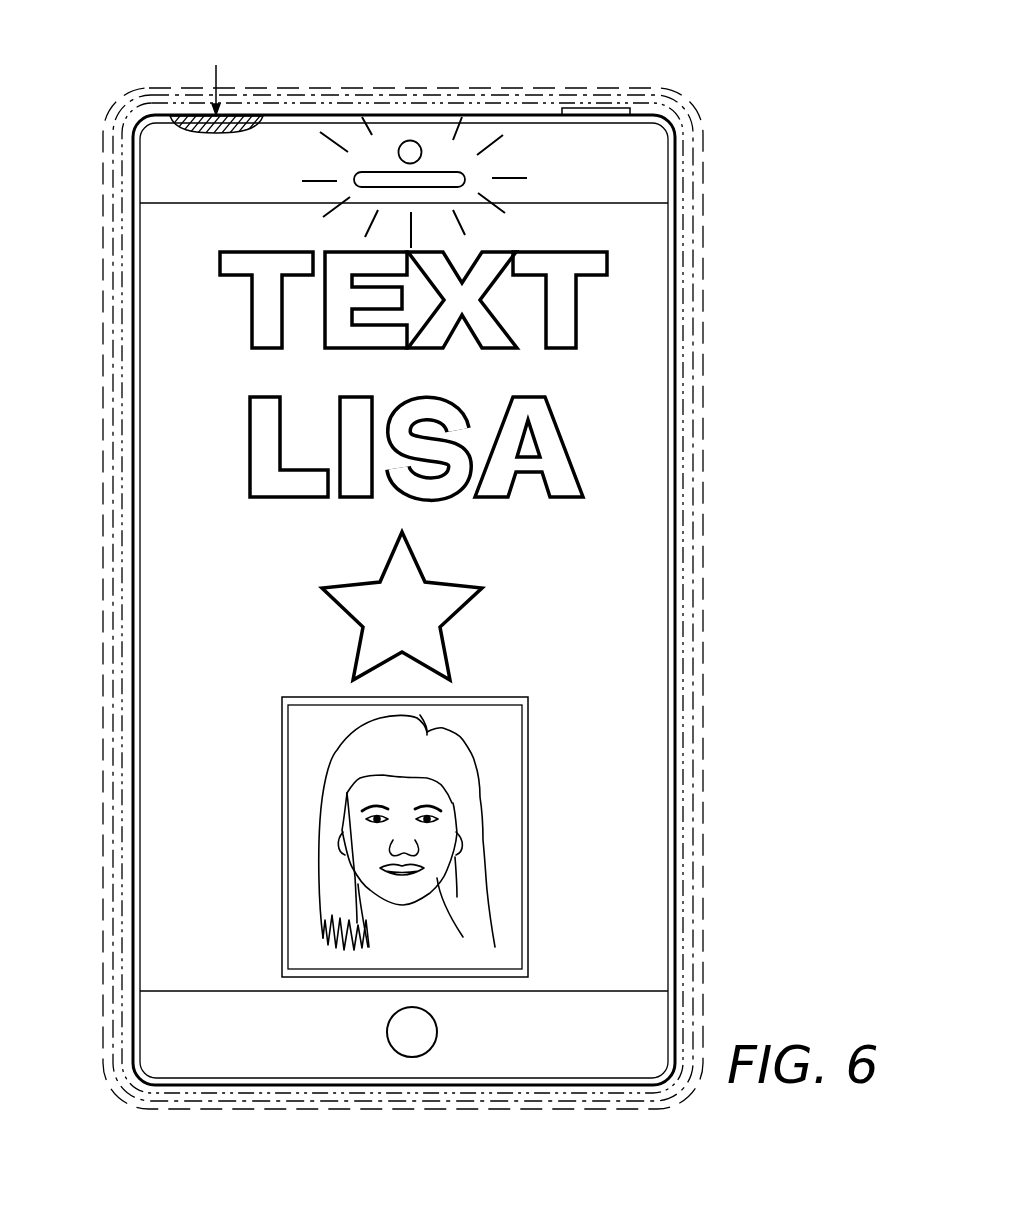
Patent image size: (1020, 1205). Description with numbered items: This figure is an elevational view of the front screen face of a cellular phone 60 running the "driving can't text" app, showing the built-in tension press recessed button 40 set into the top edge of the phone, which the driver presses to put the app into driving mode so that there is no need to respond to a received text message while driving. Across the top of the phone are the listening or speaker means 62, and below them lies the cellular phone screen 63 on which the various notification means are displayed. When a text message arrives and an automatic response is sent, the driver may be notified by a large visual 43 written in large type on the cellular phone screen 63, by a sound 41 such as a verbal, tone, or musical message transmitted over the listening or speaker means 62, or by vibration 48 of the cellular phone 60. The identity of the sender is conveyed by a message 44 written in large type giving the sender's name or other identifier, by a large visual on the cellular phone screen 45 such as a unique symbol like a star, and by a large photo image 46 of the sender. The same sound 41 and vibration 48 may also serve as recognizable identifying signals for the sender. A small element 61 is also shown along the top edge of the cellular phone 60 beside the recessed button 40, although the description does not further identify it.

The built-in tension press recessed button 40 is at (197, 116).
The sound 41 is at (408, 140).
The large visual 43 is at (255, 322).
The message 44 is at (255, 470).
The large visual on the cellular phone screen 45 is at (362, 633).
The large photo image 46 is at (282, 838).
The vibration 48 is at (103, 972).
The cellular phone 60 is at (133, 188).
The button 61 is at (593, 108).
The listening or speaker means 62 is at (435, 172).
The cellular phone screen 63 is at (175, 282).